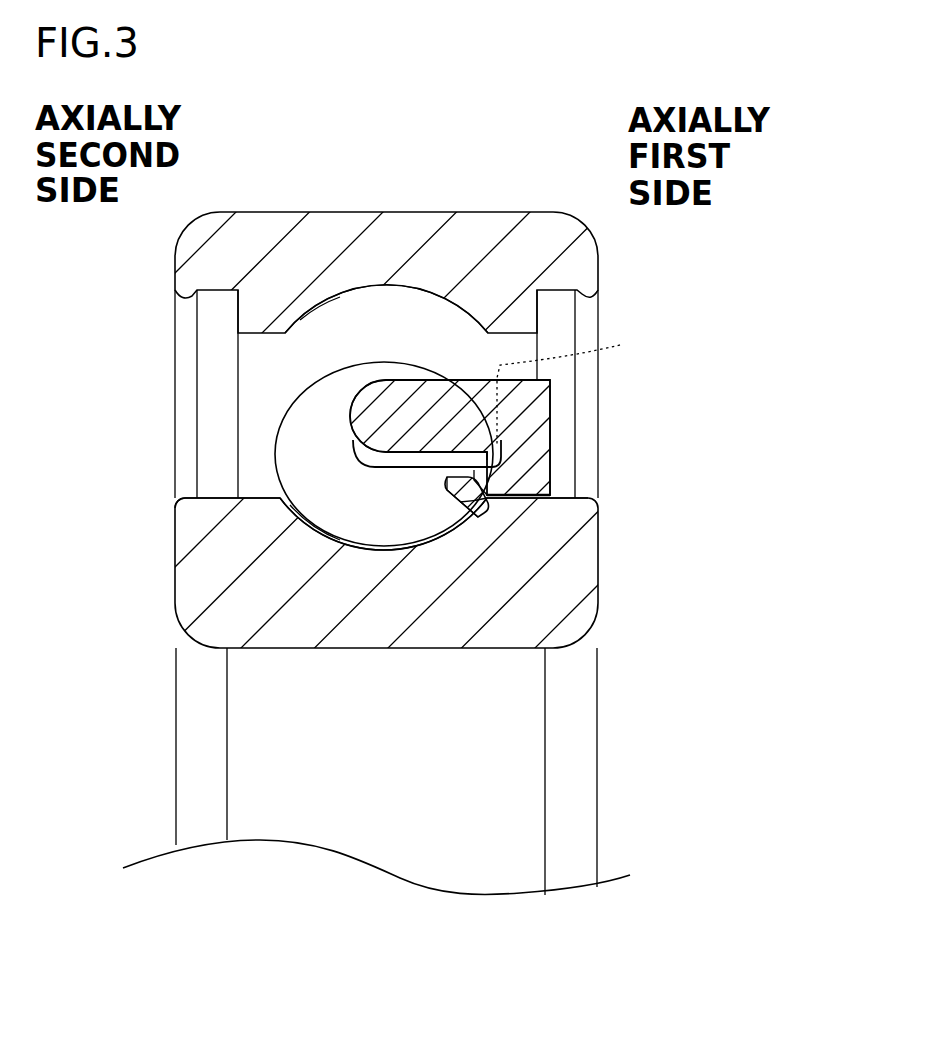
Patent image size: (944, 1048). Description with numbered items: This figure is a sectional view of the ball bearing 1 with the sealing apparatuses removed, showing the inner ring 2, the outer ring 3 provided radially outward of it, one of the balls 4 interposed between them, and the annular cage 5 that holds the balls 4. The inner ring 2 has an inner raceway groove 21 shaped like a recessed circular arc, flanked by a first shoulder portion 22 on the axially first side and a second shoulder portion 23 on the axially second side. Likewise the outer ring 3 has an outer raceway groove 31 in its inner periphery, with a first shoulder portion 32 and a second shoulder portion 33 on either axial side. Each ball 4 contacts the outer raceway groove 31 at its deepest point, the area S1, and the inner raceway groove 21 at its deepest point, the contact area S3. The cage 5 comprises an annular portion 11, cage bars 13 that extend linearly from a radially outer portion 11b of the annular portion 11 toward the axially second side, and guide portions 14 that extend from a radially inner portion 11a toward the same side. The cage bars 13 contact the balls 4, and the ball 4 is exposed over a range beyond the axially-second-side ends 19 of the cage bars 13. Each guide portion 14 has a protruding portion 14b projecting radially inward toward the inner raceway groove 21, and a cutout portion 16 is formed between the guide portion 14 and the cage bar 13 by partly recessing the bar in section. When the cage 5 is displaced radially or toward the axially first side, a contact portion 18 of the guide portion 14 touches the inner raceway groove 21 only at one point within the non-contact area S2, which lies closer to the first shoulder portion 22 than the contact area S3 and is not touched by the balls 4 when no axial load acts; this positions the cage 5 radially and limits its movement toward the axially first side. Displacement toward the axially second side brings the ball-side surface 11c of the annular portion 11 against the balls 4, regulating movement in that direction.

The ball bearing 1 is at (518, 210).
The inner ring 2 is at (600, 550).
The outer ring 3 is at (600, 268).
The balls 4 is at (290, 451).
The cage 5 is at (553, 394).
The annular portion 11 is at (553, 412).
The radially inner portion 11a is at (495, 488).
The radially outer portion 11b is at (555, 388).
The ball-side surface 11c is at (576, 390).
The cage bars 13 is at (413, 400).
The guide portions 14 is at (460, 475).
The protruding portion 14b is at (450, 493).
The cutout portion 16 is at (500, 453).
The contact portion 18 is at (472, 513).
The axially-second-side ends 19 is at (352, 413).
The inner raceway groove 21 is at (328, 525).
The first shoulder portion 22 is at (580, 518).
The second shoulder portion 23 is at (192, 510).
The outer raceway groove 31 is at (338, 298).
The first shoulder portion 32 is at (522, 315).
The second shoulder portion 33 is at (260, 322).
The contact area S1 is at (385, 290).
The non-contact area S2 is at (553, 487).
The contact area S3 is at (387, 545).